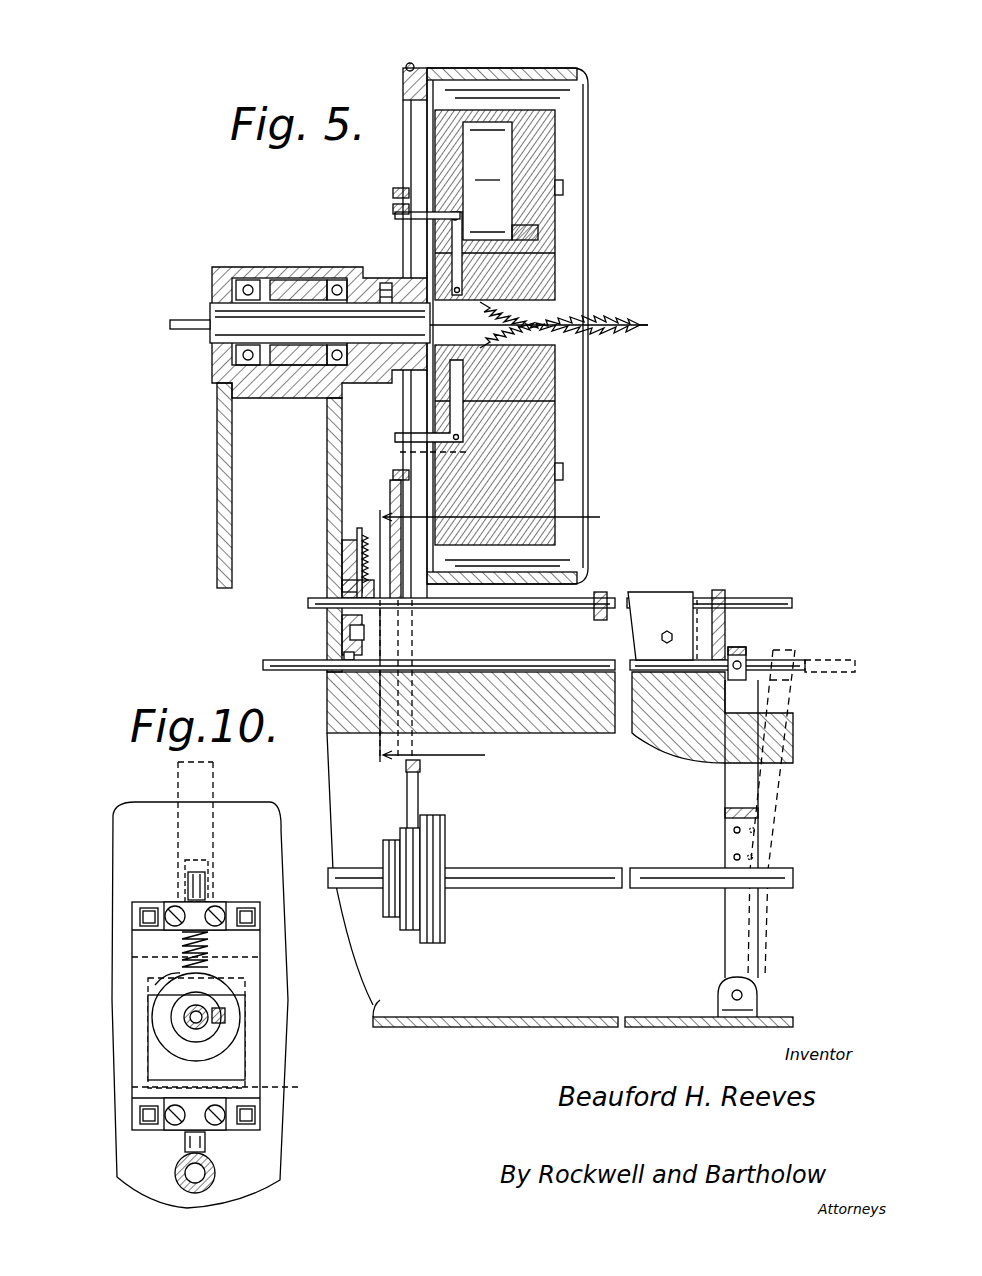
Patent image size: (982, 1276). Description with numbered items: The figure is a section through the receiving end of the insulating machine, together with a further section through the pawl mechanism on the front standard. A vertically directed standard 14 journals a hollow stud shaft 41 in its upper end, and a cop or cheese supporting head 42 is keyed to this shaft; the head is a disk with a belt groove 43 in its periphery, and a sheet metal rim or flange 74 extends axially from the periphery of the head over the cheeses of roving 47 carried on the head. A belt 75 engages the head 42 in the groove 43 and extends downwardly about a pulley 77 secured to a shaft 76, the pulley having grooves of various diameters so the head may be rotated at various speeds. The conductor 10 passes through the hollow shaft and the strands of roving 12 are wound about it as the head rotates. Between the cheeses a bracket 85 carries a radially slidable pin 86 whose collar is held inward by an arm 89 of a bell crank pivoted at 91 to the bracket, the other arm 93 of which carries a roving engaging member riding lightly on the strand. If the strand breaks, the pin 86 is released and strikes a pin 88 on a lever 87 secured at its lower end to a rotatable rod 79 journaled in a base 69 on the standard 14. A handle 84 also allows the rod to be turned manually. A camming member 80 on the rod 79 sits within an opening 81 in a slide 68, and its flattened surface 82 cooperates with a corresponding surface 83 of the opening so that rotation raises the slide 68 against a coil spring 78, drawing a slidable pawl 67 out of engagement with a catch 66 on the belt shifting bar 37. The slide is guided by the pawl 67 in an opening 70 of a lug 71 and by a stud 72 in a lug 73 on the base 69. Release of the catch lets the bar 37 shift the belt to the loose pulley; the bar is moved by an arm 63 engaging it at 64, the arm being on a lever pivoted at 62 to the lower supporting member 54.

In FIG. 5, the conductor 10 is at (180, 318).
In FIG. 5, the strands of roving 12 is at (598, 312).
In FIG. 5, the standard 14 is at (218, 430).
In FIG. 10, the standard 14 is at (272, 876).
In FIG. 5, the belt shifting bar 37 is at (485, 660).
In FIG. 10, the belt shifting bar 37 is at (212, 1180).
In FIG. 5, the hollow stud shaft 41 is at (230, 325).
In FIG. 5, the cop or cheese supporting head 42 is at (392, 280).
In FIG. 5, the belt groove 43 is at (425, 85).
In FIG. 5, the roving 47 is at (556, 420).
In FIG. 5, the lower supporting member 54 is at (570, 1017).
In FIG. 5, the pivot 62 is at (742, 994).
In FIG. 5, the arm 63 is at (740, 698).
In FIG. 5, the engagement point 64 is at (742, 660).
In FIG. 5, the catch 66 is at (347, 660).
In FIG. 5, the slidable pawl 67 is at (345, 640).
In FIG. 10, the slidable pawl 67 is at (205, 1142).
In FIG. 5, the slide 68 is at (345, 590).
In FIG. 10, the slide 68 is at (245, 990).
In FIG. 5, the base 69 is at (345, 554).
In FIG. 10, the base 69 is at (250, 940).
In FIG. 10, the opening 70 is at (233, 1086).
In FIG. 10, the lug 71 is at (195, 1120).
In FIG. 10, the stud 72 is at (200, 880).
In FIG. 10, the lug 73 is at (200, 912).
In FIG. 5, the sheet metal rim or flange 74 is at (538, 70).
In FIG. 5, the belt 75 is at (407, 66).
In FIG. 5, the shaft 76 is at (520, 868).
In FIG. 5, the pulley 77 is at (420, 880).
In FIG. 10, the coil spring 78 is at (183, 950).
In FIG. 5, the rotatable rod 79 is at (310, 602).
In FIG. 10, the rotatable rod 79 is at (186, 1020).
In FIG. 10, the camming member 80 is at (180, 1035).
In FIG. 10, the opening 81 is at (165, 1062).
In FIG. 10, the flattened surface 82 is at (160, 975).
In FIG. 10, the surface 83 is at (160, 1000).
In FIG. 5, the handle 84 is at (600, 592).
In FIG. 5, the bracket 85 is at (398, 190).
In FIG. 5, the slidable pin 86 is at (395, 208).
In FIG. 5, the lever 87 is at (392, 492).
In FIG. 5, the pin 88 is at (395, 475).
In FIG. 5, the arm 89 is at (395, 214).
In FIG. 5, the pivot 91 is at (458, 216).
In FIG. 5, the arm 93 is at (450, 386).